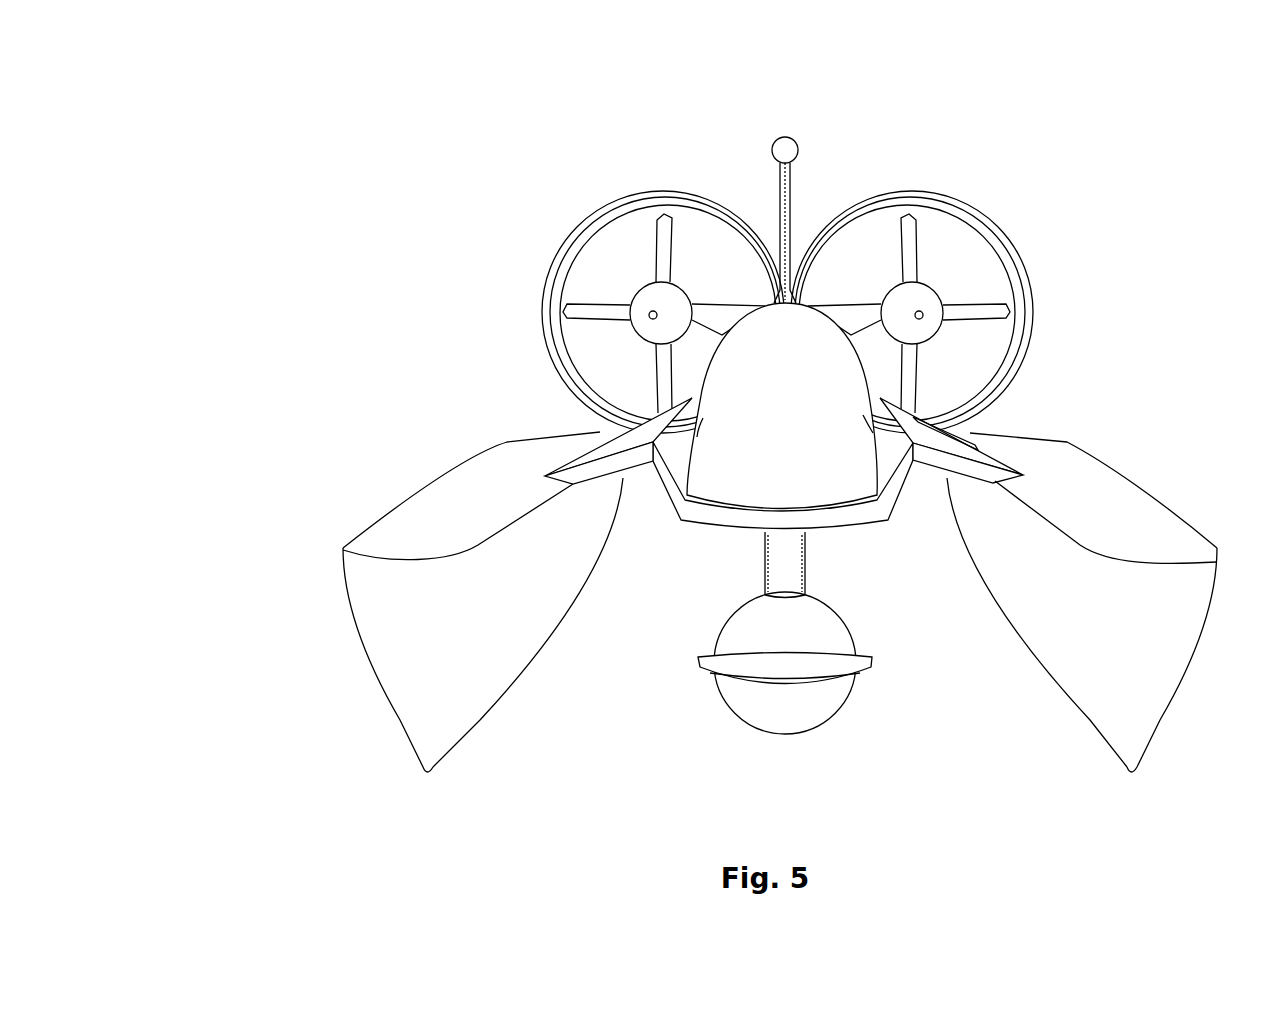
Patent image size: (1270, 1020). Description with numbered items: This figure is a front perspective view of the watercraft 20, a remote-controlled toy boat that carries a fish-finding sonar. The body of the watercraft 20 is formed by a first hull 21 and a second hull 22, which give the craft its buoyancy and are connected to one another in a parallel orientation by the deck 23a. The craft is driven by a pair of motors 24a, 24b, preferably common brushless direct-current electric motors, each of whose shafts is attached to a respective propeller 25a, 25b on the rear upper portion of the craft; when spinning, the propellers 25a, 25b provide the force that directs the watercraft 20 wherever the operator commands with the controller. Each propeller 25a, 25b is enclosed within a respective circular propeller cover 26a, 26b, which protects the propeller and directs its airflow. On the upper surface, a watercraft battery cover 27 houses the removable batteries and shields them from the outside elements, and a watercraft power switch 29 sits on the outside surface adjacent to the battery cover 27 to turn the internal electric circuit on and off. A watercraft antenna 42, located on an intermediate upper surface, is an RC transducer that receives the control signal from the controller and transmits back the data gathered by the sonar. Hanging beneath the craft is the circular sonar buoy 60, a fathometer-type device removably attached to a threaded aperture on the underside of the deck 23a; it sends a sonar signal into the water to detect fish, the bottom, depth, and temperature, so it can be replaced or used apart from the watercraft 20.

The watercraft 20 is at (250, 147).
The first hull 21 is at (1183, 613).
The second hull 22 is at (383, 603).
The deck 23a is at (977, 460).
The motor 24a is at (647, 328).
The motor 24b is at (932, 296).
The propeller 25a is at (660, 220).
The propeller 25b is at (912, 230).
The circular propeller cover 26a is at (558, 295).
The circular propeller cover 26b is at (1012, 267).
The watercraft battery cover 27 is at (965, 432).
The watercraft power switch 29 is at (980, 448).
The watercraft antenna 42 is at (792, 183).
The sonar buoy 60 is at (760, 700).